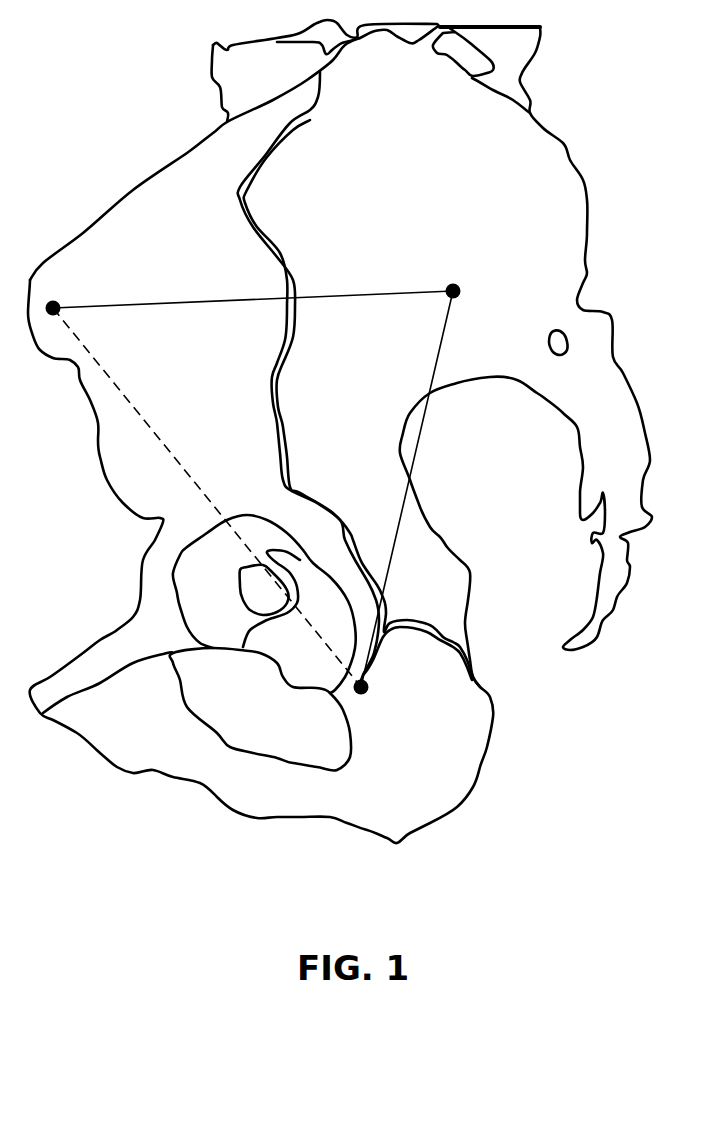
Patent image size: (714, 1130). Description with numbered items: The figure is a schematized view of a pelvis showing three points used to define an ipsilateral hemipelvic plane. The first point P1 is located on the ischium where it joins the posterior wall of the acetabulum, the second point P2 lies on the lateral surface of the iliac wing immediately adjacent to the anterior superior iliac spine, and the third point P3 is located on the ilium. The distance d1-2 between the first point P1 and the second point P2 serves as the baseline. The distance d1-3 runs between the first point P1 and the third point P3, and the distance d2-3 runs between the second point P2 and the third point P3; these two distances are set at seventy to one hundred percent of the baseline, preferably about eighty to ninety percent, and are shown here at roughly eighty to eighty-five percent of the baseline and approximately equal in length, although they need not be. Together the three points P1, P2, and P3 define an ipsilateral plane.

The first point P1 is at (377, 691).
The second point P2 is at (62, 291).
The third point P3 is at (456, 275).
The distance between the first point and the second point d1-2 is at (207, 497).
The distance between the first point and the third point d1-3 is at (410, 489).
The distance between the second point and the third point d2-3 is at (253, 289).